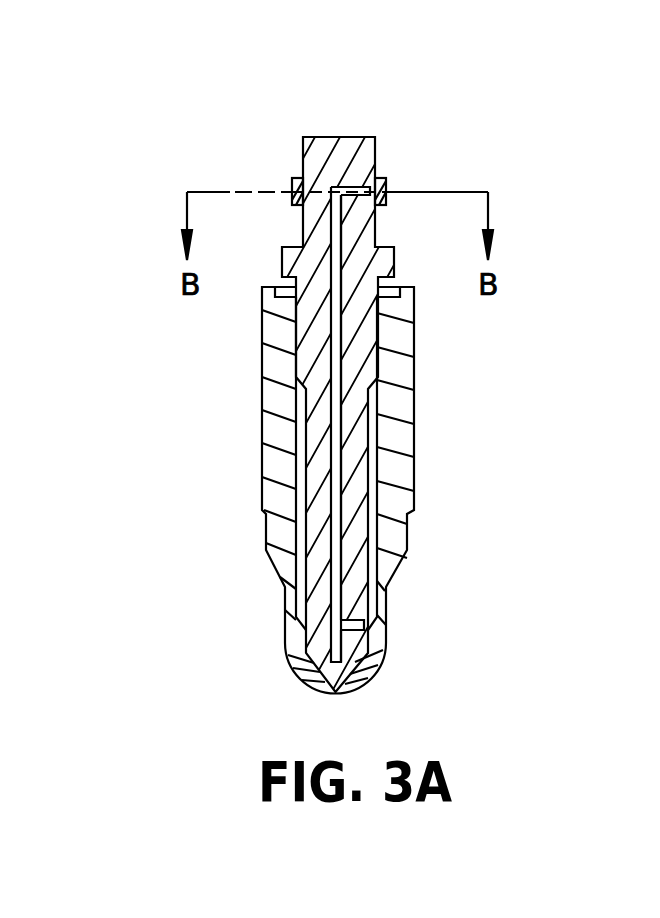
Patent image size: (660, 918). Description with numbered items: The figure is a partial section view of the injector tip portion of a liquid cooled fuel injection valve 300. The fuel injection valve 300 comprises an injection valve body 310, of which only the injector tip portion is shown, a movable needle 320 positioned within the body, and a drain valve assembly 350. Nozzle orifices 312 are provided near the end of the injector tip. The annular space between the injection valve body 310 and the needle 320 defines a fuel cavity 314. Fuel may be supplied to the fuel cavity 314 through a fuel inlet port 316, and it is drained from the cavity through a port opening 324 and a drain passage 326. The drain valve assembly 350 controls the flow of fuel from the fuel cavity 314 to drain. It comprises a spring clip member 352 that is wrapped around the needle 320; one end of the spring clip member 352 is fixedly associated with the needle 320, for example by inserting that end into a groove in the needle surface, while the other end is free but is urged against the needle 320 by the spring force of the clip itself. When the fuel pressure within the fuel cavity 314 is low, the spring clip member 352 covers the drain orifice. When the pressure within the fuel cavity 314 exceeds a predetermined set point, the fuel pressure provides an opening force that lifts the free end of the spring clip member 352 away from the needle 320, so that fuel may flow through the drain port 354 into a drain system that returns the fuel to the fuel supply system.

The fuel injection valve 300 is at (240, 123).
The drain valve assembly 350 is at (425, 130).
The drain port 354 is at (383, 178).
The spring clip member 352 is at (378, 190).
The injection valve body 310 is at (272, 392).
The fuel inlet port 316 is at (398, 375).
The movable needle 320 is at (315, 463).
The drain passage 326 is at (340, 497).
The fuel cavity 314 is at (298, 532).
The port opening 324 is at (362, 624).
The nozzle orifices 312 is at (293, 662).